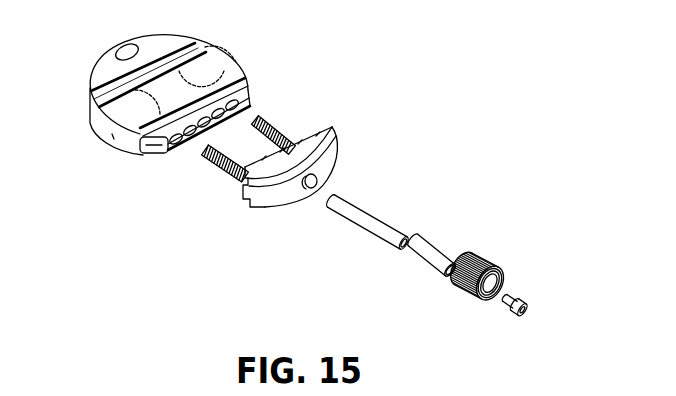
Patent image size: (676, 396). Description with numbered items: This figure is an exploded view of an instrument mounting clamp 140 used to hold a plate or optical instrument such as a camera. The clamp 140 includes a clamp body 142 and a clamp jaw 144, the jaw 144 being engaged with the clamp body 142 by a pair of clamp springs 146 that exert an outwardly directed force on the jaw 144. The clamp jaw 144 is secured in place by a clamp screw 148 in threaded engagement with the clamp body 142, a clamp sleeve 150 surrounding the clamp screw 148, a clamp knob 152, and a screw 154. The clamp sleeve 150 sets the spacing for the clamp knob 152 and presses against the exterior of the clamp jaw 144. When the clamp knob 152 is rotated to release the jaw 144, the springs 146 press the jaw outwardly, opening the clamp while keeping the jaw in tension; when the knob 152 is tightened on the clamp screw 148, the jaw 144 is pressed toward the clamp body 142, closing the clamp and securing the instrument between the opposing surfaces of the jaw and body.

The clamp 140 is at (128, 197).
The clamp body 142 is at (218, 58).
The clamp jaw 144 is at (333, 162).
The clamp springs 146 is at (279, 127).
The clamp screw 148 is at (355, 205).
The clamp sleeve 150 is at (427, 248).
The clamp knob 152 is at (492, 263).
The screw 154 is at (529, 296).